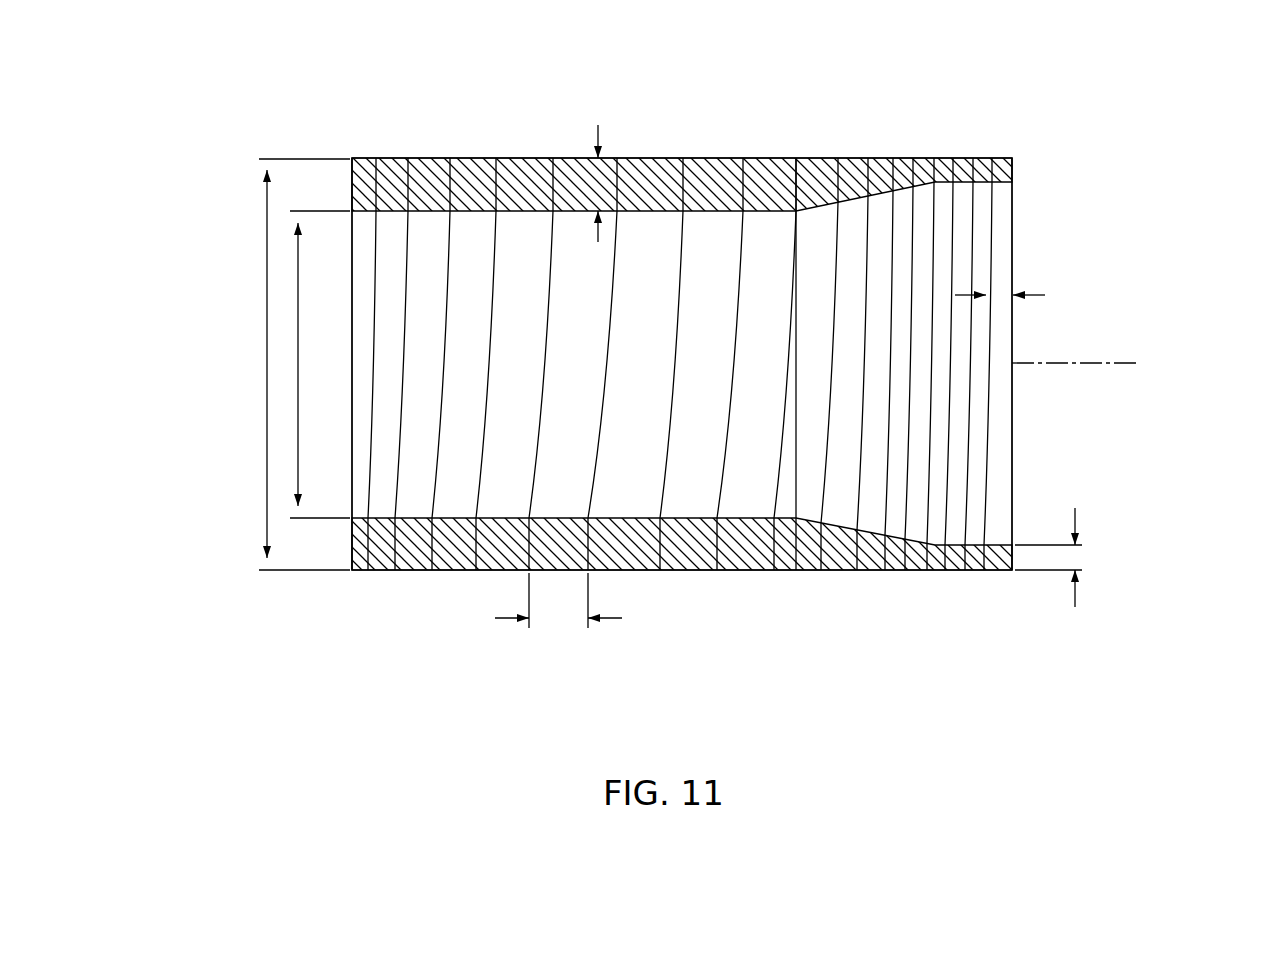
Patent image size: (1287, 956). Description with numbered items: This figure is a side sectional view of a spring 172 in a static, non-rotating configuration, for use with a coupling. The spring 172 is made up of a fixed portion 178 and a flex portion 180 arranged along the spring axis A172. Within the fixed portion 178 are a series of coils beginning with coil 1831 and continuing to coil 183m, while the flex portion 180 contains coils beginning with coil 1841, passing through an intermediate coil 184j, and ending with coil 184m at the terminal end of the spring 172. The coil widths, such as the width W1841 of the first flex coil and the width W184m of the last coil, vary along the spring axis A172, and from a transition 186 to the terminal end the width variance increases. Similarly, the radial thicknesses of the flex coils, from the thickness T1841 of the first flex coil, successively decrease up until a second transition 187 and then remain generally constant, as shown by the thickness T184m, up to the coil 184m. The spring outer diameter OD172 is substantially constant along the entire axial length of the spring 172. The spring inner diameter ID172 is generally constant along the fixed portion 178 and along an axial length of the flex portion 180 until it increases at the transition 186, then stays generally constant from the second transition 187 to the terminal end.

The spring 172 is at (217, 125).
The coil 1831 is at (360, 152).
The coil 183m is at (527, 148).
The coil 1841 is at (577, 158).
The radial thickness of coil T1841 is at (600, 183).
The transition 186 is at (790, 150).
The second transition 187 is at (928, 150).
The coil 184m is at (1000, 152).
The coil width W184m is at (1000, 298).
The spring axis A172 is at (1175, 370).
The radial thickness of coil T184m is at (1083, 557).
The fixed portion 178 is at (387, 576).
The coil width W1841 is at (560, 620).
The coil 184j is at (737, 575).
The flex portion 180 is at (798, 625).
The spring outer diameter OD172 is at (262, 322).
The spring inner diameter ID172 is at (296, 413).